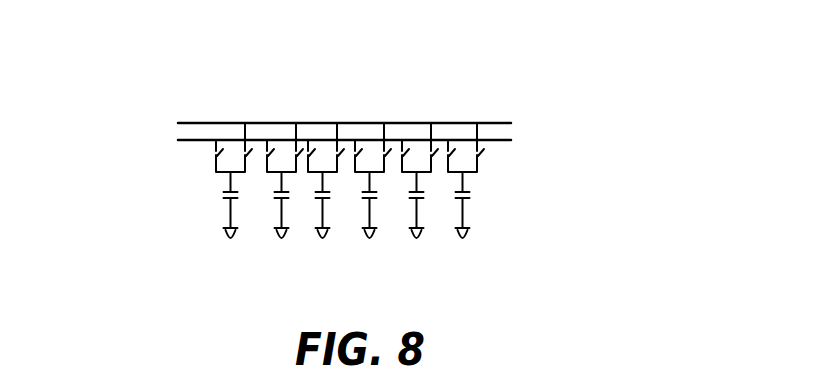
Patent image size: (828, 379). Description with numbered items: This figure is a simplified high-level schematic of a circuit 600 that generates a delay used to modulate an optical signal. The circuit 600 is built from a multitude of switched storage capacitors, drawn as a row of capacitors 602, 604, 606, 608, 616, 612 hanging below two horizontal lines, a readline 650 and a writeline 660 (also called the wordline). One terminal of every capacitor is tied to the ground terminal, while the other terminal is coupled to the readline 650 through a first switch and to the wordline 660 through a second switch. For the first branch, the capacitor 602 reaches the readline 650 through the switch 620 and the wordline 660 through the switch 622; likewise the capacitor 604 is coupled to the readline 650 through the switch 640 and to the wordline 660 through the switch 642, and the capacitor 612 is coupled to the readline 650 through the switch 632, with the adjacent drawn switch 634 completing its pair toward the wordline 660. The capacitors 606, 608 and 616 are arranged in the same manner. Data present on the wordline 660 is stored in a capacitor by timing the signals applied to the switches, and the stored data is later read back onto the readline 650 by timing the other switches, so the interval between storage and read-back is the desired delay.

The circuit 600 is at (455, 95).
The readline 650 is at (212, 122).
The writeline 660 is at (505, 140).
The switch 620 is at (240, 151).
The switch 622 is at (246, 152).
The switch 640 is at (270, 154).
The switch 642 is at (298, 153).
The switch 632 is at (452, 157).
The switch terminal 634 is at (478, 153).
The capacitor 602 is at (218, 202).
The capacitor 604 is at (273, 205).
The capacitor 606 is at (317, 205).
The capacitor 608 is at (377, 210).
The capacitor branch 616 is at (427, 205).
The capacitor 612 is at (475, 202).